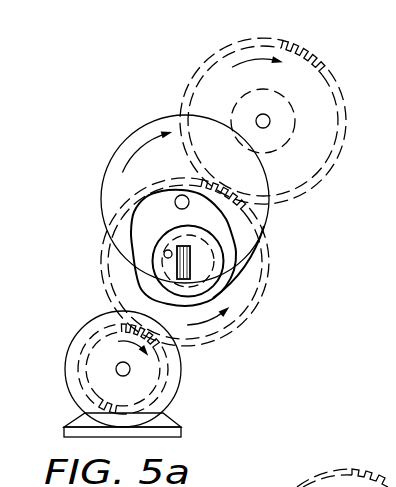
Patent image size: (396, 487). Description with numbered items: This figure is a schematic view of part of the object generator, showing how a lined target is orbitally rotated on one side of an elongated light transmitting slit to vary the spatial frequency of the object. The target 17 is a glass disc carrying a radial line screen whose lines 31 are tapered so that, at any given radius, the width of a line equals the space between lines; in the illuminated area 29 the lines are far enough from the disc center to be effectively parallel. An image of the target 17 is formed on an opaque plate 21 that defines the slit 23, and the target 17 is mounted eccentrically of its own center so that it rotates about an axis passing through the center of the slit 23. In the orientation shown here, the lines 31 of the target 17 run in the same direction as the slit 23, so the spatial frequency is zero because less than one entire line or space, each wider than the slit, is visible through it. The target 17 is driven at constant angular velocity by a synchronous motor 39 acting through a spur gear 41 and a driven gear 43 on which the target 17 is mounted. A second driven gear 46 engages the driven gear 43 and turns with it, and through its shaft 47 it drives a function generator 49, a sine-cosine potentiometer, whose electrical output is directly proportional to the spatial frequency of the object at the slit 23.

The target 17 is at (104, 178).
The plate 21 is at (230, 290).
The slit 23 is at (137, 275).
The area 29 is at (167, 250).
The lines 31 is at (190, 258).
The synchronous motor 39 is at (69, 353).
The spur gear 41 is at (90, 371).
The driven gear 43 is at (259, 266).
The second driven gear 46 is at (326, 118).
The shaft 47 is at (269, 118).
The function generator 49 is at (242, 97).